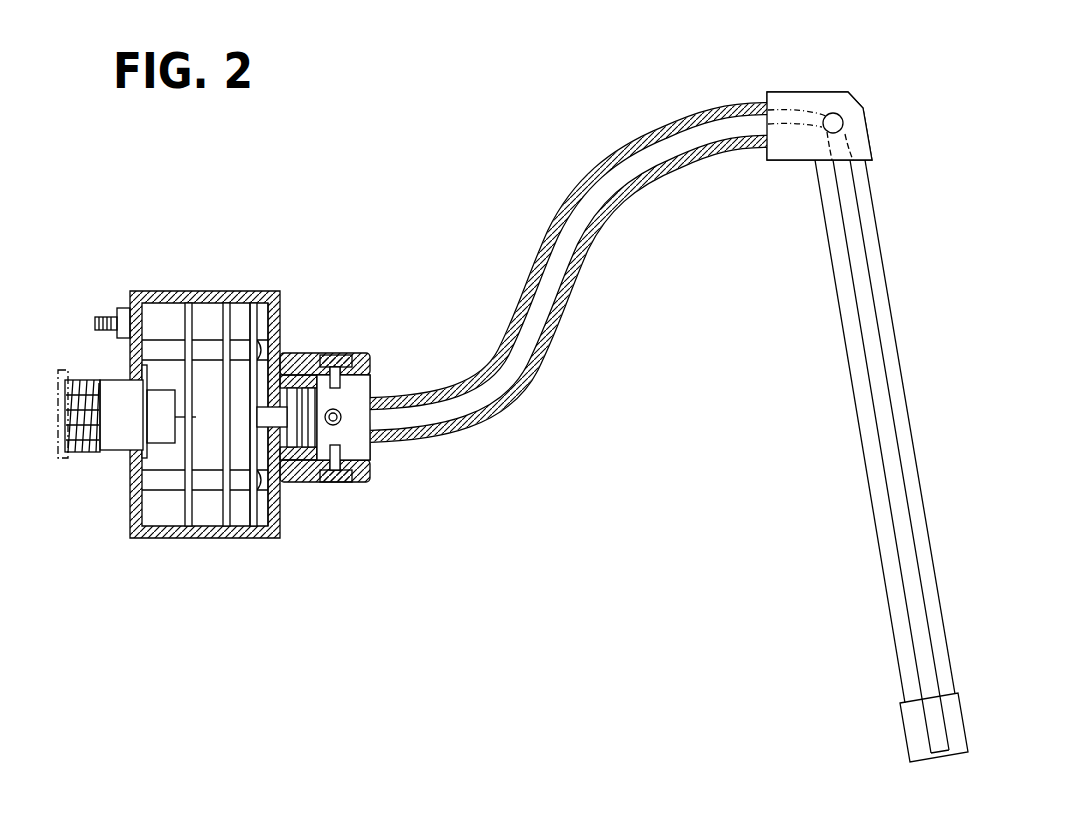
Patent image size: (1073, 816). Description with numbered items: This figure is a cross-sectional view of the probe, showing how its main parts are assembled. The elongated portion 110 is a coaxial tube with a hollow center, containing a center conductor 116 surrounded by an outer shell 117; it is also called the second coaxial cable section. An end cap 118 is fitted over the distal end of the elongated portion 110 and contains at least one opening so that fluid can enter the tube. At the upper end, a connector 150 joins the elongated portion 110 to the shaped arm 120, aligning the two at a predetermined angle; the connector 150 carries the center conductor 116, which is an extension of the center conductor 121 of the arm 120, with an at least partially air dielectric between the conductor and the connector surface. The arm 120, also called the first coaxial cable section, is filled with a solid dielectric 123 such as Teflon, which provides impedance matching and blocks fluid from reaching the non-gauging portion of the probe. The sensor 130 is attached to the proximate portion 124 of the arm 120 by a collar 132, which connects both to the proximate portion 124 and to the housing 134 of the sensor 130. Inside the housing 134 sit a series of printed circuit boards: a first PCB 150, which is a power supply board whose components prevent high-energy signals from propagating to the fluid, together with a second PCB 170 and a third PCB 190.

The elongated portion 110 is at (926, 461).
The center conductor 116 is at (918, 560).
The outer shell 117 is at (900, 683).
The end cap 118 is at (957, 726).
The shaped arm 120 is at (568, 239).
The center conductor 121 is at (674, 123).
The dielectric 123 is at (587, 172).
The proximate portion 124 is at (372, 453).
The sensor 130 is at (125, 541).
The collar 132 is at (357, 391).
The housing 134 is at (271, 540).
The connector 150 is at (184, 528).
The second PCB 170 is at (224, 528).
The third PCB 190 is at (251, 528).